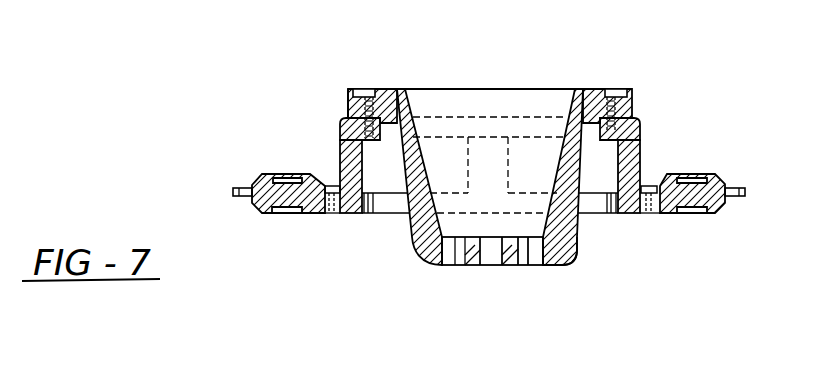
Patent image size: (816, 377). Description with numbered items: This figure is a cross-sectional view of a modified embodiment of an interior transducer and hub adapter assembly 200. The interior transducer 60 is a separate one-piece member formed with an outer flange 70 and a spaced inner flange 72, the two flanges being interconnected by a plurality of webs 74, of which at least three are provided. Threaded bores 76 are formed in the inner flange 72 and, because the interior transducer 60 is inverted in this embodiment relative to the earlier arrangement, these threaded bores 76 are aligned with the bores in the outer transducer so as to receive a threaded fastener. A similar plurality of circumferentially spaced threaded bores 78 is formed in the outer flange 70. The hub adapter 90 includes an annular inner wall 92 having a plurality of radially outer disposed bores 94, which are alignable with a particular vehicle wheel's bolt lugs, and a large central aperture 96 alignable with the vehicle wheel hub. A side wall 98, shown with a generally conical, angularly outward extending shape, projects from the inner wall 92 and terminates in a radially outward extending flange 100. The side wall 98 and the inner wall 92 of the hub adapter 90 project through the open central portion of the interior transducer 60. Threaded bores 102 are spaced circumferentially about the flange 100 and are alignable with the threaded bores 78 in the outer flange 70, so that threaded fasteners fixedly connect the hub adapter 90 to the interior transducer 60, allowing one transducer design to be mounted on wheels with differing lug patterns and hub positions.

The fixture assembly 200 is at (219, 138).
The interior transducer 60 is at (372, 153).
The outer flange 70 is at (343, 121).
The inner flange 72 is at (348, 214).
The webs 74 is at (342, 150).
The threaded bores 76 is at (306, 213).
The threaded bores 78 is at (346, 97).
The hub adapter 90 is at (430, 155).
The annular inner wall 92 is at (420, 258).
The radially outer disposed bores 94 is at (535, 265).
The central aperture 96 is at (492, 265).
The side wall 98 is at (567, 227).
The flange 100 is at (352, 94).
The threaded bores 102 is at (378, 96).